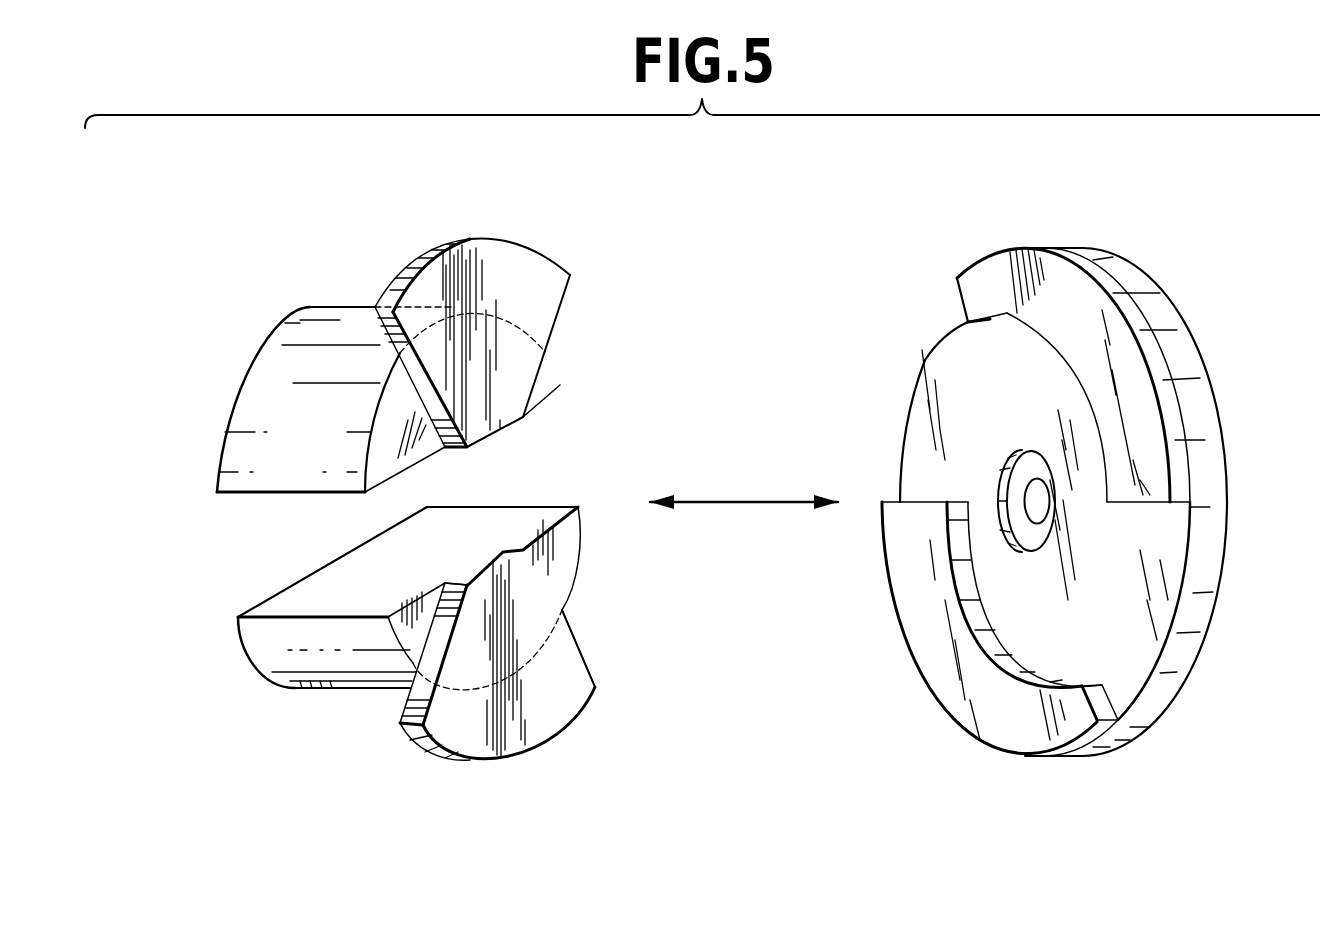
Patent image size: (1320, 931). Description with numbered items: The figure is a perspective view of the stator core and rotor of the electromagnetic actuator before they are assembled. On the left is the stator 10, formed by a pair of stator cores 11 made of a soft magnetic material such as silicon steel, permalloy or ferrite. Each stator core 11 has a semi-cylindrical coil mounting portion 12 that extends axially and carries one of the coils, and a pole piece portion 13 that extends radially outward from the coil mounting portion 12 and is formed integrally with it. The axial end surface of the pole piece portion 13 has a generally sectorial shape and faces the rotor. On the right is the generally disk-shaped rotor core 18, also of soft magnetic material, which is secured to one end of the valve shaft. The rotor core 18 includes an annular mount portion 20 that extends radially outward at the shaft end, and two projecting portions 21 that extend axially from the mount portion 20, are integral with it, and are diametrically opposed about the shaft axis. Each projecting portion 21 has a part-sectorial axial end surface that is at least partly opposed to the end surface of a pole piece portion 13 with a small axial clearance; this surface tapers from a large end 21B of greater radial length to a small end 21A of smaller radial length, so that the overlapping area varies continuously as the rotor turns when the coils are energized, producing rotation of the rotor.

The stator 10 is at (204, 466).
The stator core 11 is at (242, 368).
The coil mounting portion 12 is at (314, 328).
The pole piece portion 13 is at (497, 270).
The rotor core 18 is at (1178, 290).
The annular mount portion 20 is at (1165, 572).
The projecting portion 21 is at (1077, 286).
The small end 21A is at (973, 283).
The large end 21B is at (1153, 469).